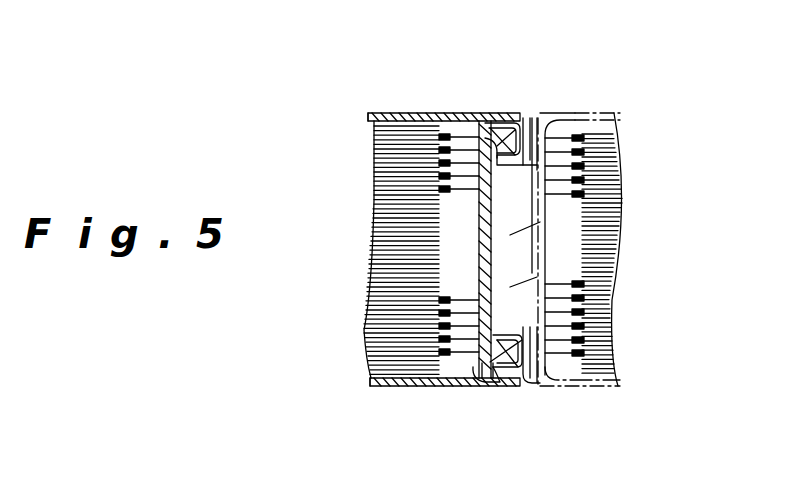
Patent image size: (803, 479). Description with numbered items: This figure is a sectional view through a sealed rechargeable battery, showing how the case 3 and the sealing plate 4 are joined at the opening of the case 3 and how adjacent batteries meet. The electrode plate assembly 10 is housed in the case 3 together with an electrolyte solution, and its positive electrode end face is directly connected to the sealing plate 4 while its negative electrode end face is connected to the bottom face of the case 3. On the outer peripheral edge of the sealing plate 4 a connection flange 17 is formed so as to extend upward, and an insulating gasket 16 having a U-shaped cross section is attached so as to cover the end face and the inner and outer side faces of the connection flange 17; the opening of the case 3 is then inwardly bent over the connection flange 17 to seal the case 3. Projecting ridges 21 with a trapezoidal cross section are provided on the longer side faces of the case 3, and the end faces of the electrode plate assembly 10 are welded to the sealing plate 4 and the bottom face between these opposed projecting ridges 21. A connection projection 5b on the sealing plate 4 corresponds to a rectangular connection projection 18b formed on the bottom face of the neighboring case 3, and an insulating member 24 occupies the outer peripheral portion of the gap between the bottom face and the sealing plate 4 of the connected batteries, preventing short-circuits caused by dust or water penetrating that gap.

The case 3 is at (395, 388).
The sealing plate 4 is at (478, 226).
The connection projection 5b is at (622, 217).
The electrode plate assembly 10 is at (370, 250).
The insulating gasket 16 is at (497, 113).
The connection flange 17 is at (485, 360).
The connection projection 18b is at (538, 270).
The projecting ridge 21 is at (413, 113).
The insulating member 24 is at (537, 118).